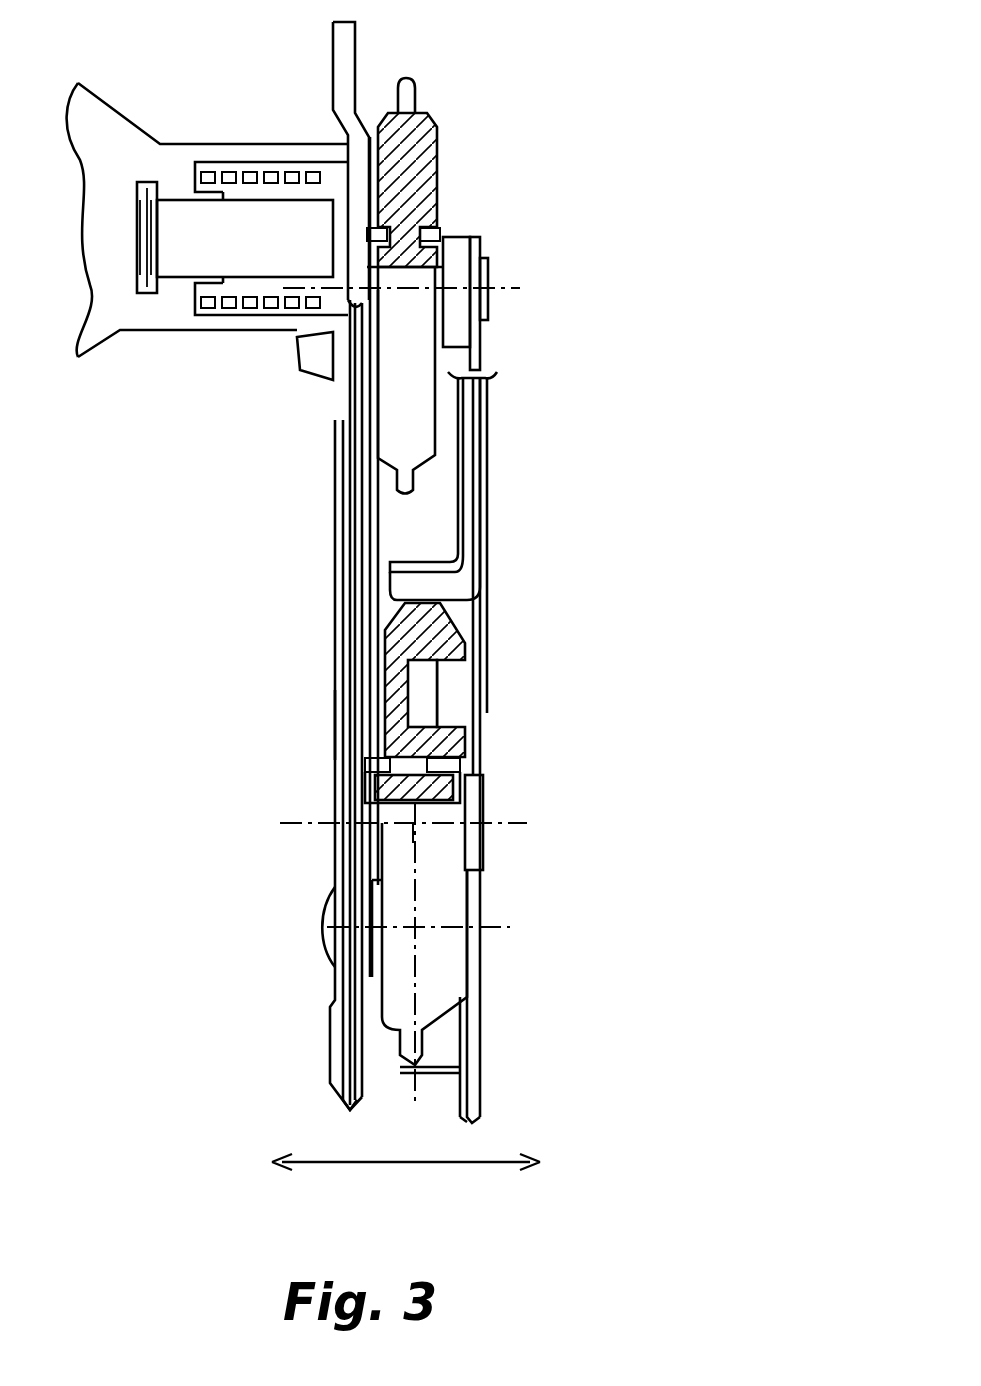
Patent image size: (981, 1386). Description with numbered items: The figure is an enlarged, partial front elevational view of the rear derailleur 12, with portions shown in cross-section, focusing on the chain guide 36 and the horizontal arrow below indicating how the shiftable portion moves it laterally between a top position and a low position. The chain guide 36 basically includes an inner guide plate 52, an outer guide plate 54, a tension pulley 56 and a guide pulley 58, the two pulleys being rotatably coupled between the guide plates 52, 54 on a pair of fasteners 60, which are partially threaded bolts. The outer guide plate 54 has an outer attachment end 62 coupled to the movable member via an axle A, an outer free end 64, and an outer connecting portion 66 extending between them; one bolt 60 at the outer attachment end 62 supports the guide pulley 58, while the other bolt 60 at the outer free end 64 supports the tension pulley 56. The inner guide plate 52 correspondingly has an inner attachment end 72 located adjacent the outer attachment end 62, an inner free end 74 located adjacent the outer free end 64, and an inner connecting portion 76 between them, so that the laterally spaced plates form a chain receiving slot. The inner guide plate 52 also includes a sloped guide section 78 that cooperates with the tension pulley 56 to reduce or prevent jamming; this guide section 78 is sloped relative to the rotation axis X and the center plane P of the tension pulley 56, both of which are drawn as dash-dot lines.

The rear derailleur 12 is at (504, 88).
The axle A is at (175, 197).
The guide pulley 58 is at (435, 167).
The fasteners 60 is at (488, 263).
The inner attachment end 72 is at (480, 342).
The chain guide 36 is at (497, 403).
The inner guide plate 52 is at (495, 525).
The outer guide plate 54 is at (337, 637).
The outer attachment end 62 is at (337, 400).
The outer connecting portion 66 is at (333, 702).
The outer free end 64 is at (332, 1058).
The inner connecting portion 76 is at (483, 650).
The guide section 78 is at (480, 907).
The tension pulley 56 is at (442, 1022).
The inner free end 74 is at (480, 1093).
The rotation axis X is at (447, 928).
The center plane P is at (413, 843).